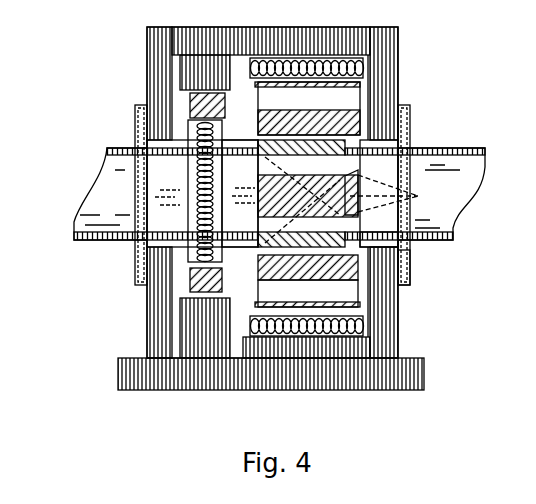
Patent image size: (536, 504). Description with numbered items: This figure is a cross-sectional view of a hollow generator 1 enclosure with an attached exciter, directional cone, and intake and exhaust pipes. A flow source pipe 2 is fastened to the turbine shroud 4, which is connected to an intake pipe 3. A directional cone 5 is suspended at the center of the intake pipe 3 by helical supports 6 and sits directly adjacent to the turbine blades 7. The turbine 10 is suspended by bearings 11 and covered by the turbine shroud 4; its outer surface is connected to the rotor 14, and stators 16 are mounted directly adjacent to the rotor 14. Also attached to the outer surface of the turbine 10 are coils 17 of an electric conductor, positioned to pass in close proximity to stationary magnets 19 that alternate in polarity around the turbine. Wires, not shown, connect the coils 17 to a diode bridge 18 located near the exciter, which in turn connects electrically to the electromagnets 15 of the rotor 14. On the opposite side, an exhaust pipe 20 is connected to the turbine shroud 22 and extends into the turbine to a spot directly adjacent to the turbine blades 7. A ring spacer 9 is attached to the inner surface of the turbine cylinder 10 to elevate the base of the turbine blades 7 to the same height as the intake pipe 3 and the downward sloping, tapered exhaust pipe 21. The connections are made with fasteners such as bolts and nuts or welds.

The hollow generator 1 is at (100, 62).
The flow source pipe 2 is at (457, 196).
The intake pipe 3 is at (383, 238).
The turbine shroud 4 is at (410, 130).
The directional cone 5 is at (382, 182).
The helical supports 6 is at (378, 195).
The turbine blades 7 is at (267, 157).
The ring spacer 9 is at (308, 202).
The turbine 10 is at (258, 140).
The bearings 11 is at (406, 264).
The rotor 14 is at (320, 107).
The electromagnets 15 is at (320, 279).
The stators 16 is at (248, 312).
The coils 17 is at (197, 223).
The diode bridge 18 is at (244, 182).
The stationary magnets 19 is at (206, 281).
The exhaust pipe 20 is at (165, 150).
The tapered exhaust pipe 21 is at (248, 240).
The turbine shroud 22 is at (127, 264).